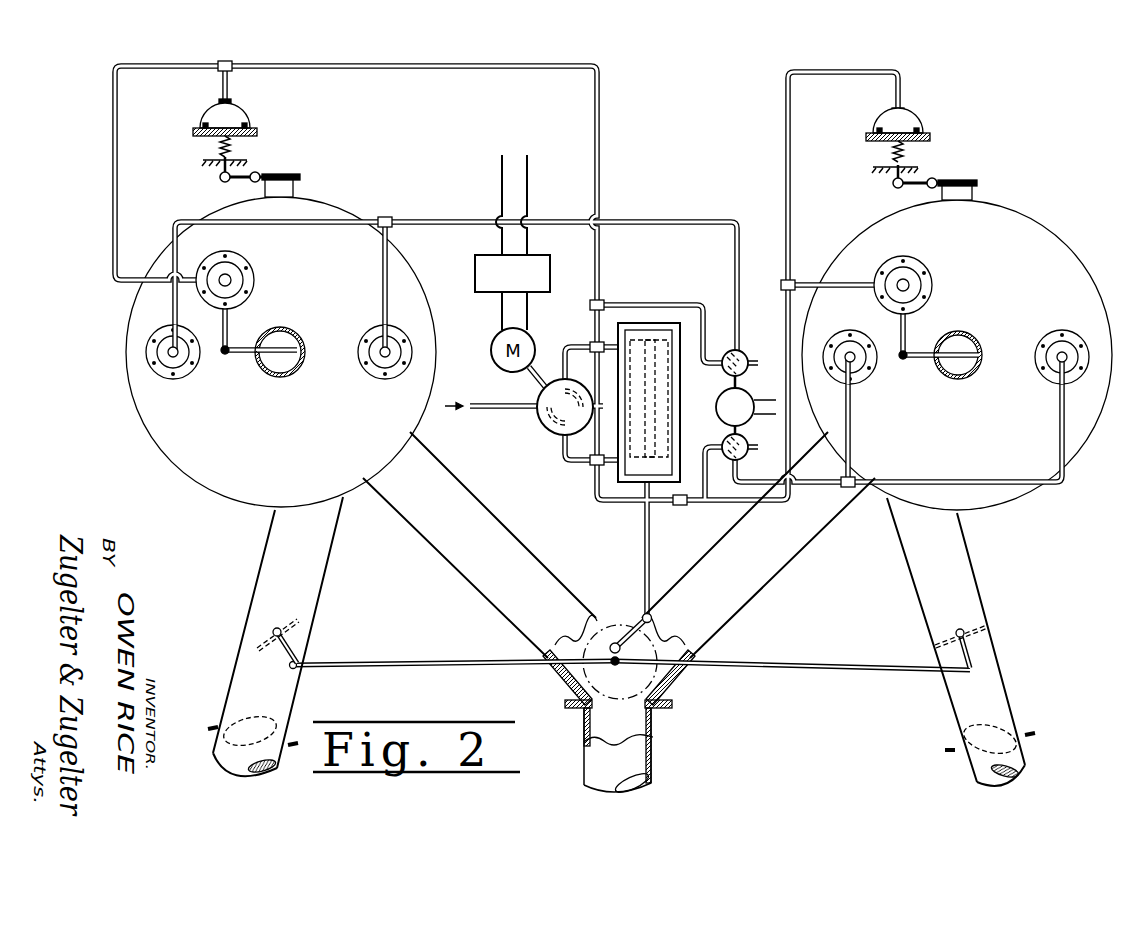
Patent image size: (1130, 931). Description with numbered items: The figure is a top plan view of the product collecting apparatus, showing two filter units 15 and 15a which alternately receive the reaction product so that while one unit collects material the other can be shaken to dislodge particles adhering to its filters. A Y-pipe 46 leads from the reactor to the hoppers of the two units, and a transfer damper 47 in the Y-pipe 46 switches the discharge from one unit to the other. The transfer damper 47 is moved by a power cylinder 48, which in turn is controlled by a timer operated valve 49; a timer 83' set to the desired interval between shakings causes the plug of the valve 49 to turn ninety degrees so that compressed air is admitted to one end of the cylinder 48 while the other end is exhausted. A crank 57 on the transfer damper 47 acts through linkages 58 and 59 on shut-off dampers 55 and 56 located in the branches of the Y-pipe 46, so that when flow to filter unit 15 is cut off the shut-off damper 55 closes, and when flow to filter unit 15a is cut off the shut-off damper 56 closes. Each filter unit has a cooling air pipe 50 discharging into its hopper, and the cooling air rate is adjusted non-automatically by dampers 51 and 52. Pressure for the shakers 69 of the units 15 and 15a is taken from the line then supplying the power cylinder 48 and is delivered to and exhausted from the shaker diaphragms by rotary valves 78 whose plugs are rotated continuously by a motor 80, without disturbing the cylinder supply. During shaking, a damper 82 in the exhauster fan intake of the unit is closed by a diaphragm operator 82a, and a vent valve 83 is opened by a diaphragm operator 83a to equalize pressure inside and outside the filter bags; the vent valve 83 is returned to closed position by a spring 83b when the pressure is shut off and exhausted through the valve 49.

The filter unit 15a is at (132, 470).
The filter unit 15 is at (1126, 478).
The shakers 69 is at (187, 403).
The diaphragm operator 82a is at (254, 282).
The damper 82 is at (295, 338).
The vent valve 83 is at (619, 168).
The diaphragm operator 83a is at (239, 114).
The spring 83b is at (234, 150).
The timer 83' is at (485, 264).
The timer operated valve 49 is at (543, 418).
The power cylinder 48 is at (680, 396).
The rotary valve 78 is at (741, 351).
The motor 80 is at (748, 393).
The Y-pipe 46 is at (544, 570).
The damper 47 is at (673, 688).
The crank 57 is at (657, 628).
The linkage 59 is at (451, 662).
The linkage 58 is at (843, 664).
The cooling air pipe 50 is at (330, 568).
The damper 52 is at (245, 726).
The damper 51 is at (1005, 726).
The shut-off damper 56 is at (304, 632).
The shut-off damper 55 is at (978, 628).